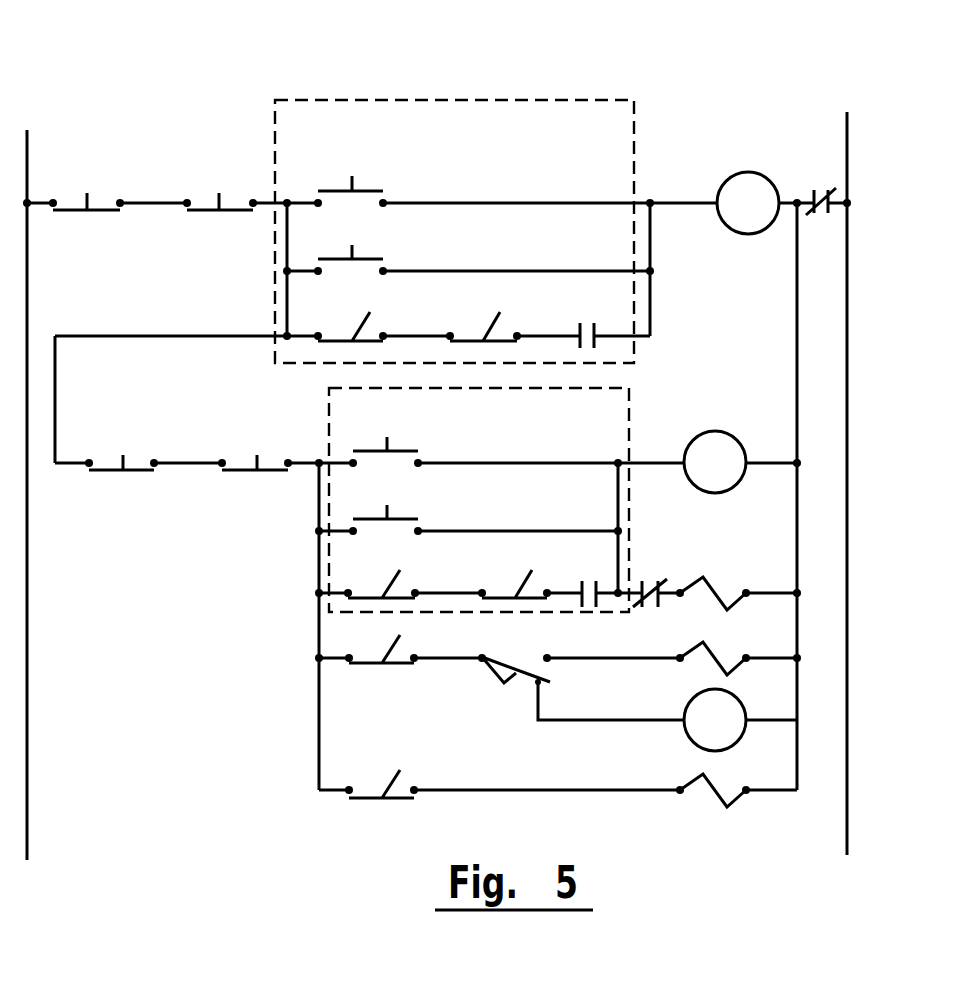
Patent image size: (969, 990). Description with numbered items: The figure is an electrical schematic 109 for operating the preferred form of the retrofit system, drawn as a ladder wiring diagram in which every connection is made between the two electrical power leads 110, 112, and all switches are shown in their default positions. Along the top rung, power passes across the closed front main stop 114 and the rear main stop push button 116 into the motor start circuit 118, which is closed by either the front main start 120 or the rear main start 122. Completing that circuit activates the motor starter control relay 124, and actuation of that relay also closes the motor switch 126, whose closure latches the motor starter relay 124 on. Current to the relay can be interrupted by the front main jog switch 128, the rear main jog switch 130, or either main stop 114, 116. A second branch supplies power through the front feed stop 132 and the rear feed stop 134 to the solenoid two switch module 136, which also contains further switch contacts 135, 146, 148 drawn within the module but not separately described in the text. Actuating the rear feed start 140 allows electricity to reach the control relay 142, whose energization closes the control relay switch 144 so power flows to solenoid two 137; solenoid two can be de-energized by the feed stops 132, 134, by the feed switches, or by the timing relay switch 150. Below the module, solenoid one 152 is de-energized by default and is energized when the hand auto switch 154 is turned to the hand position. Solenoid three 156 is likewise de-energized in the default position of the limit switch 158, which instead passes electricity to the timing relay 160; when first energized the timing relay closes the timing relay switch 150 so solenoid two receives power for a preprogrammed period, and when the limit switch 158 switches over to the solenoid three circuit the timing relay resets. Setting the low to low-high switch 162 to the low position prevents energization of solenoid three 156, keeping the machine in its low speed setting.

The electrical schematic 109 is at (109, 104).
The electrical power lead 110 is at (27, 278).
The electrical power lead 112 is at (847, 290).
The front main stop 114 is at (115, 157).
The rear main stop push button 116 is at (213, 147).
The motor start circuit 118 is at (579, 92).
The front main start 120 is at (385, 140).
The rear main start 122 is at (370, 220).
The motor starter control relay 124 is at (757, 170).
The motor switch 126 is at (600, 310).
The front main jog switch 128 is at (403, 315).
The rear main jog switch 130 is at (556, 316).
The front feed stop 132 is at (122, 412).
The rear feed stop 134 is at (232, 425).
The rear main start switch (feed circuit) 135 is at (418, 403).
The solenoid two switch module 136 is at (633, 418).
The solenoid two 137 is at (713, 580).
The rear feed start 140 is at (423, 478).
The control relay 142 is at (708, 430).
The control relay switch 144 is at (590, 550).
The front feed main/run switch 146 is at (383, 588).
The rear feed jog/run switch 148 is at (512, 578).
The timing relay switch 150 is at (672, 570).
The solenoid one 152 is at (716, 805).
The hand auto switch 154 is at (440, 760).
The solenoid three 156 is at (707, 643).
The limit switch 158 is at (527, 653).
The timing relay 160 is at (690, 700).
The low to low-high switch 162 is at (410, 645).